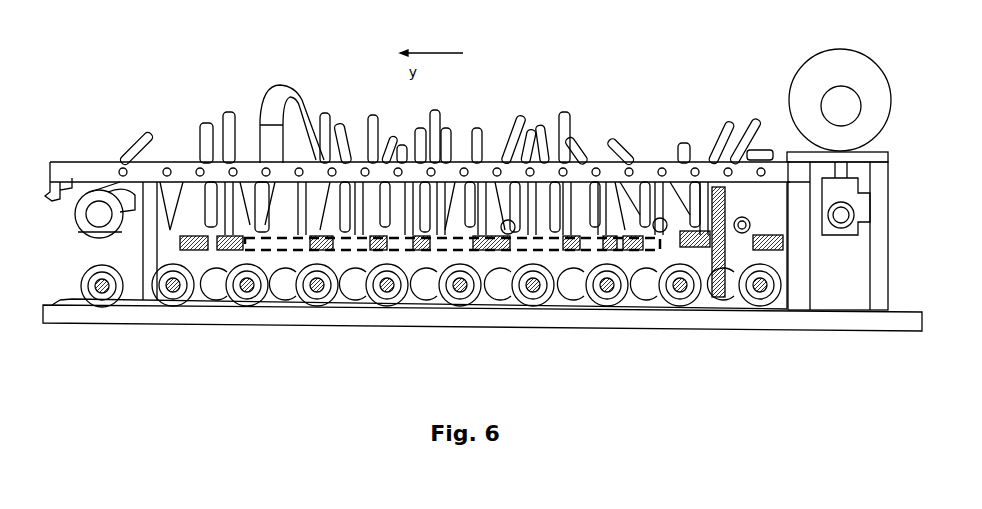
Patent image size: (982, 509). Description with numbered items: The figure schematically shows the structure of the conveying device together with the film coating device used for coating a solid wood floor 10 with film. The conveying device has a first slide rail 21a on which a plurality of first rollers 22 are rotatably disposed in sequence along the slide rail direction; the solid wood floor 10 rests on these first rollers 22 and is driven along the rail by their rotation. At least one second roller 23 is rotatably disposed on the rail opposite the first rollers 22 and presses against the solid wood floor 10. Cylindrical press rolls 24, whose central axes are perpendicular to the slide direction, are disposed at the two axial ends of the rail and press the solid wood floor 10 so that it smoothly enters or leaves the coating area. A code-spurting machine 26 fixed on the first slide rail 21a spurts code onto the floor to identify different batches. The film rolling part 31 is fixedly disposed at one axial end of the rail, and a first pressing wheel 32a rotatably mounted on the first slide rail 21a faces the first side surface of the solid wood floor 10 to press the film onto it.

The solid wood floor 10 is at (408, 252).
The first slide rail 21a is at (128, 172).
The first roller 22 is at (214, 283).
The second roller 23 is at (508, 238).
The press roll 24 is at (128, 217).
The code-spurting machine 26 is at (272, 148).
The film rolling part 31 is at (839, 103).
The first pressing wheel 32a is at (195, 252).